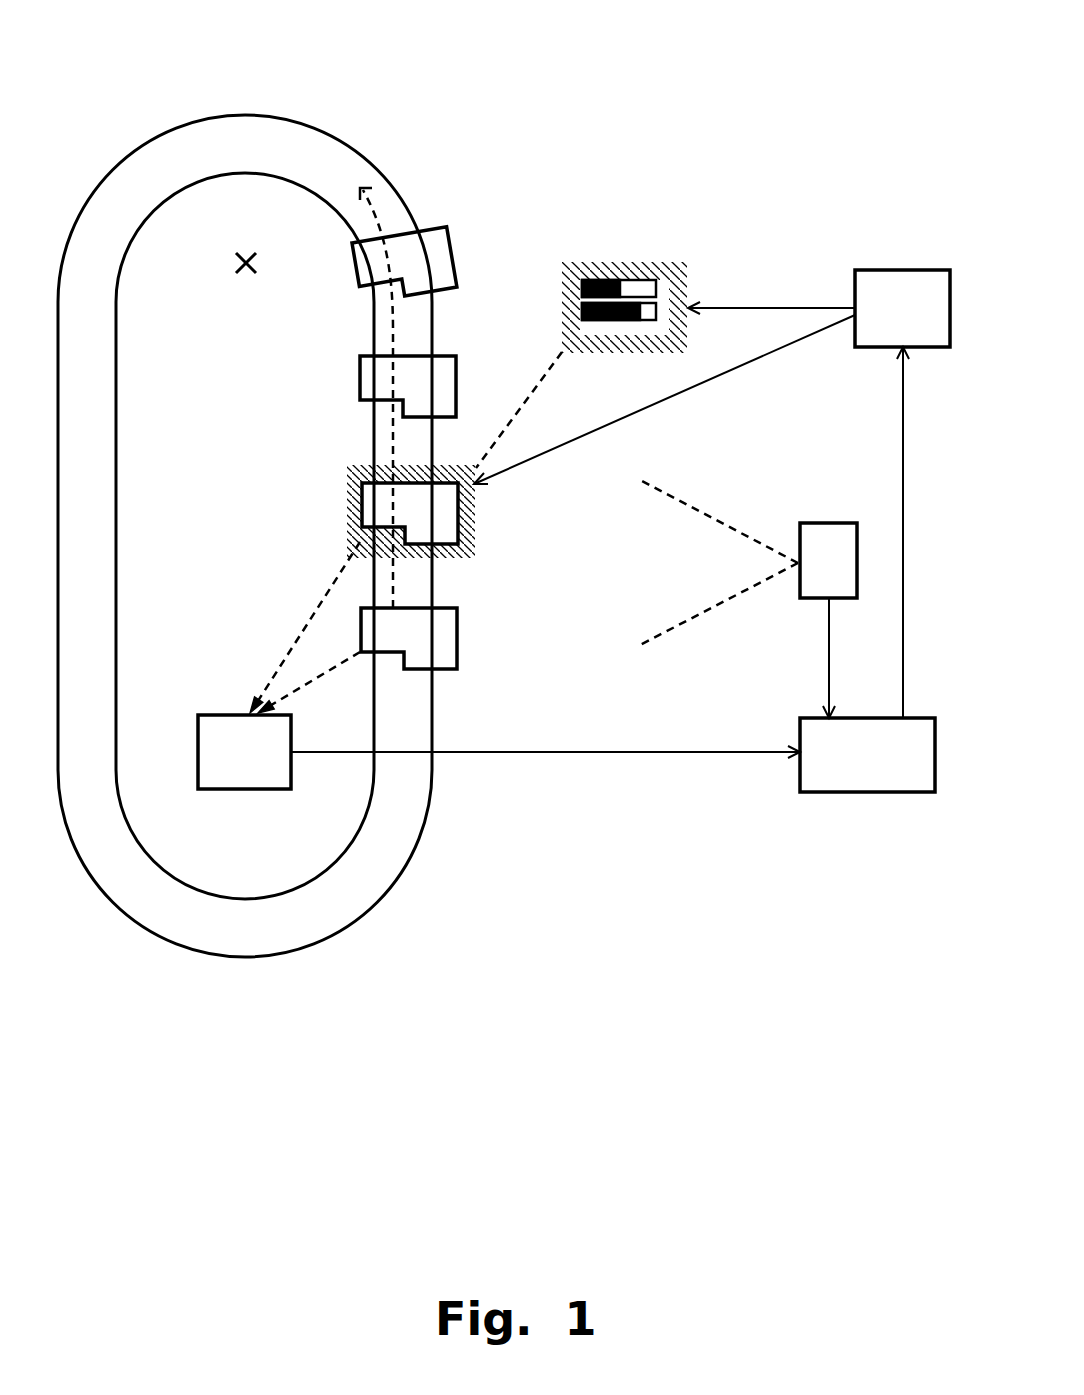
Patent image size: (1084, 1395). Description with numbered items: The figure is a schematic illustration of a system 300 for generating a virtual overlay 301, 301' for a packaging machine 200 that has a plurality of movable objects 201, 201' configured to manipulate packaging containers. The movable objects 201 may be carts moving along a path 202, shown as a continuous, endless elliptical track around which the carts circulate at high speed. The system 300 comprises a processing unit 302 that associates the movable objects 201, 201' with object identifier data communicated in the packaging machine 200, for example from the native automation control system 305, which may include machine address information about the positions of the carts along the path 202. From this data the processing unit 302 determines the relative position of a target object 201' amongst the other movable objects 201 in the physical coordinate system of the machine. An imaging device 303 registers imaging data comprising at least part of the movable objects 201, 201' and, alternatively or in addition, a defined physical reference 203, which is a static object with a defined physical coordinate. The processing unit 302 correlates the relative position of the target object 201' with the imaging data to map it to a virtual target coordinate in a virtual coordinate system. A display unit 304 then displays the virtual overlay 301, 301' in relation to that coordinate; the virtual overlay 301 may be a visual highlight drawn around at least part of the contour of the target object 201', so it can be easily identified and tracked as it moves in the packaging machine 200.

The packaging machine 200 is at (172, 55).
The movable objects 201 is at (471, 654).
The target object 201' is at (350, 510).
The path 202 is at (377, 205).
The defined physical reference 203 is at (240, 290).
The system 300 is at (757, 108).
The virtual overlay 301 is at (482, 513).
The virtual overlay 301' is at (581, 335).
The processing unit 302 is at (867, 755).
The imaging device 303 is at (820, 523).
The display unit 304 is at (902, 308).
The native automation control system 305 is at (279, 665).